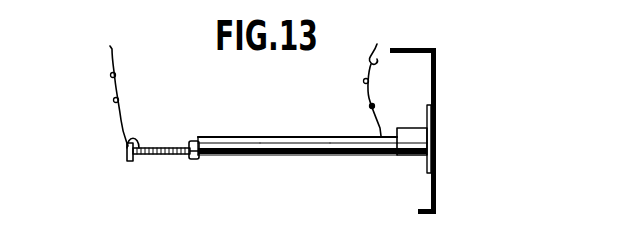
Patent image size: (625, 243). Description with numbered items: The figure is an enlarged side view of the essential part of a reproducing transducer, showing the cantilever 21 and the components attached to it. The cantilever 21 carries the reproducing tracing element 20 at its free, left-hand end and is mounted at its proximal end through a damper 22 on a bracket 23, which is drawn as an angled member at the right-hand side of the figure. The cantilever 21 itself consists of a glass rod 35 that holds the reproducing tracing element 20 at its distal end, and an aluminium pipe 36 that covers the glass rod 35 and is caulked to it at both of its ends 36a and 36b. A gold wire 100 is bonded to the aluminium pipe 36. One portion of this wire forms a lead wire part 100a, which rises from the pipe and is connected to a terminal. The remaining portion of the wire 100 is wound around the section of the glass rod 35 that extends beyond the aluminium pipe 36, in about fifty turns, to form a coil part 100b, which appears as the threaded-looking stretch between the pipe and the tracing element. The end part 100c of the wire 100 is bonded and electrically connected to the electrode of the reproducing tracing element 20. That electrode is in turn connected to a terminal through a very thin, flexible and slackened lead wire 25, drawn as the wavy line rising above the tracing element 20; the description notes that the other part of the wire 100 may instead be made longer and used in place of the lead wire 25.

The reproducing tracing element 20 is at (124, 152).
The cantilever 21 is at (270, 128).
The damper 22 is at (412, 128).
The bracket 23 is at (437, 56).
The lead wire 25 is at (116, 86).
The glass rod 35 is at (193, 157).
The aluminium pipe 36 is at (308, 156).
The end of aluminium pipe 36a is at (383, 156).
The end of aluminium pipe 36b is at (202, 157).
The gold wire 100 is at (333, 134).
The lead wire part 100a is at (384, 75).
The coil part 100b is at (148, 157).
The end part 100c is at (132, 137).